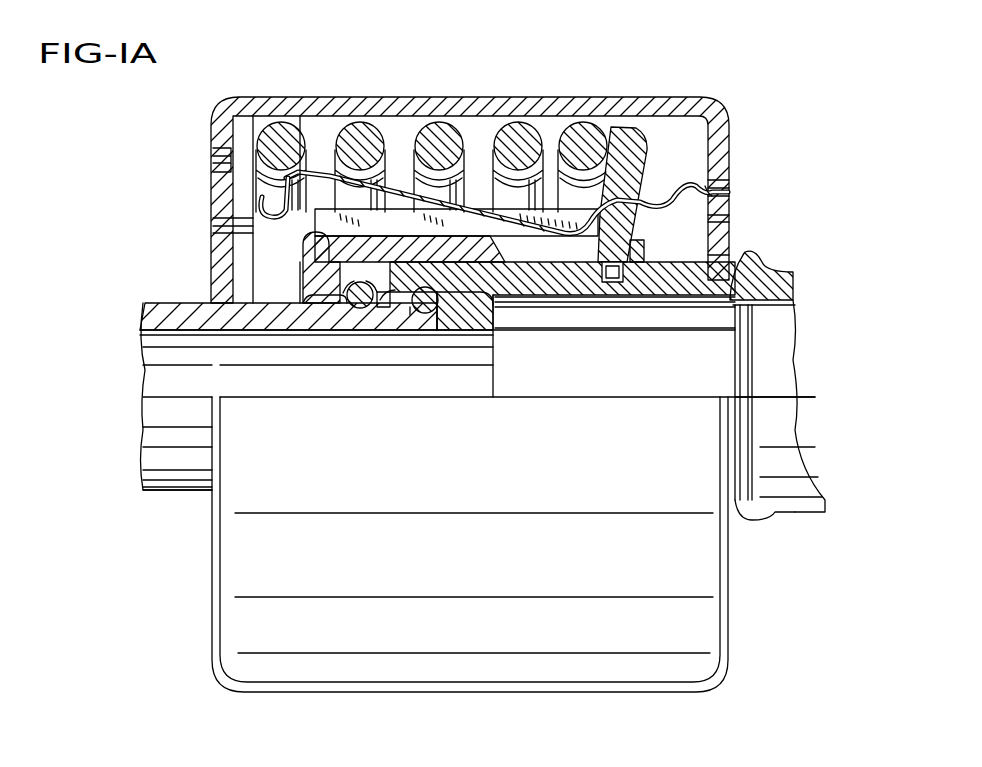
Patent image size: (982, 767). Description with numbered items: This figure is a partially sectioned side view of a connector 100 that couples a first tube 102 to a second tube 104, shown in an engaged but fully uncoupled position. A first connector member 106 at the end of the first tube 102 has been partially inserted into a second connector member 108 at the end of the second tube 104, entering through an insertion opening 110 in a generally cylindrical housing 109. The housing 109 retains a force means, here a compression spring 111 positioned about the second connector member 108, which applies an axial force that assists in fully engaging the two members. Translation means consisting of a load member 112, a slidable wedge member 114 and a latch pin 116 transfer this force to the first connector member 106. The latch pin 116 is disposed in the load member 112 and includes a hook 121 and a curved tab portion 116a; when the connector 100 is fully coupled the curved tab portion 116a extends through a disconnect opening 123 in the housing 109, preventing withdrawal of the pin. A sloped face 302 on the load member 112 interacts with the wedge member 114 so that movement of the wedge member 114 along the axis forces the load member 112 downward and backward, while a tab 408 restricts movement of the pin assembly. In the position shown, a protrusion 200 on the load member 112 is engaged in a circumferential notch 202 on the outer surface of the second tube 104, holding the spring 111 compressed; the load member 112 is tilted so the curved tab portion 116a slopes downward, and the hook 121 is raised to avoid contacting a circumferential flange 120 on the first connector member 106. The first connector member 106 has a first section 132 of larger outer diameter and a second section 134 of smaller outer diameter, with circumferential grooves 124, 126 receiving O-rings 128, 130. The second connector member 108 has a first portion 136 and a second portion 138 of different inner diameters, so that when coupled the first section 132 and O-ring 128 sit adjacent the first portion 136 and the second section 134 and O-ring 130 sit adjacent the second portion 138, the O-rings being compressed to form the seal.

The connector 100 is at (592, 84).
The first tube 102 is at (147, 456).
The second tube 104 is at (800, 514).
The first connector member 106 is at (262, 345).
The second connector member 108 is at (653, 310).
The housing 109 is at (445, 96).
The insertion opening 110 is at (232, 232).
The compression spring 111 is at (283, 138).
The load member 112 is at (638, 112).
The wedge member 114 is at (300, 250).
The latch pin 116 is at (728, 194).
The curved tab portion 116a is at (728, 218).
The circumferential flange 120 is at (285, 276).
The hook 121 is at (250, 198).
The disconnect opening 123 is at (730, 229).
The circumferential groove 124 is at (325, 320).
The circumferential groove 126 is at (472, 325).
The O-ring 128 is at (360, 308).
The O-ring 130 is at (430, 322).
The first section 132 is at (352, 322).
The second section 134 is at (452, 300).
The first portion 136 is at (432, 322).
The second portion 138 is at (512, 284).
The protrusion 200 is at (620, 282).
The circumferential notch 202 is at (600, 280).
The sloped face 302 is at (537, 303).
The tab 408 is at (677, 268).